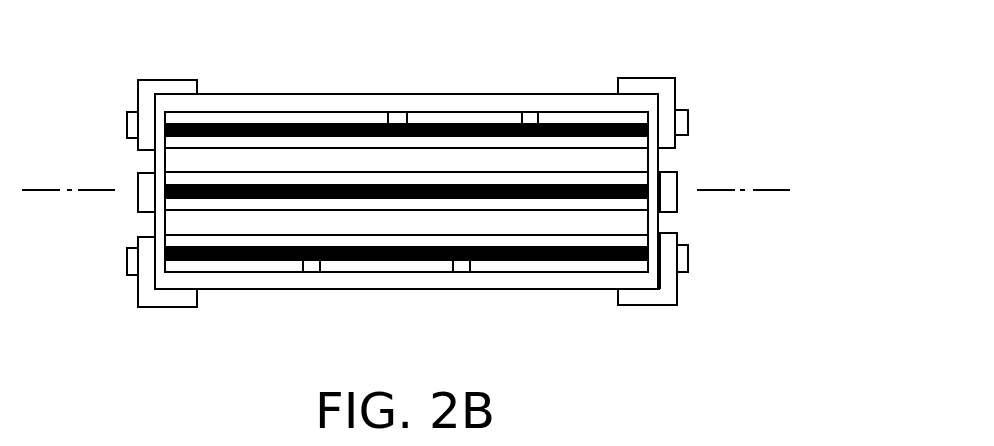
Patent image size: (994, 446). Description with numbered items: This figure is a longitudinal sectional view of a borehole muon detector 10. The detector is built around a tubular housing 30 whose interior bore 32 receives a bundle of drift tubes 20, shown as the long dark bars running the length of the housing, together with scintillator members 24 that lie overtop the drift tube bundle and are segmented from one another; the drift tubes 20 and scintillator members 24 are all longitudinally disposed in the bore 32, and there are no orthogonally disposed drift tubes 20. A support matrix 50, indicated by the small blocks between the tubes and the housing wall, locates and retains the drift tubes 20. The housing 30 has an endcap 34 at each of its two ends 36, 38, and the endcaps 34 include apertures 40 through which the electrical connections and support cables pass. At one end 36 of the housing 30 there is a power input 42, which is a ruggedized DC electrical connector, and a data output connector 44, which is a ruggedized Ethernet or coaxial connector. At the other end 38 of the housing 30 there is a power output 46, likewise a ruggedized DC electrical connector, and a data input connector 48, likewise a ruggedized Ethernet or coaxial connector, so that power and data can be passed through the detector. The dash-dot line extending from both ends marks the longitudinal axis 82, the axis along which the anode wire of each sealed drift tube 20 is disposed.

The borehole muon detector 10 is at (606, 61).
The drift tubes 20 is at (548, 140).
The scintillator members 24 is at (332, 240).
The housing 30 is at (632, 272).
The bore 32 is at (160, 262).
The endcap 34 is at (147, 90).
The end 36 is at (667, 280).
The end 38 is at (153, 103).
The apertures 40 is at (145, 162).
The power input 42 is at (690, 258).
The data output connector 44 is at (690, 120).
The power output 46 is at (133, 262).
The data input connector 48 is at (125, 127).
The support matrix 50 is at (527, 120).
The longitudinal axis 82 is at (780, 190).